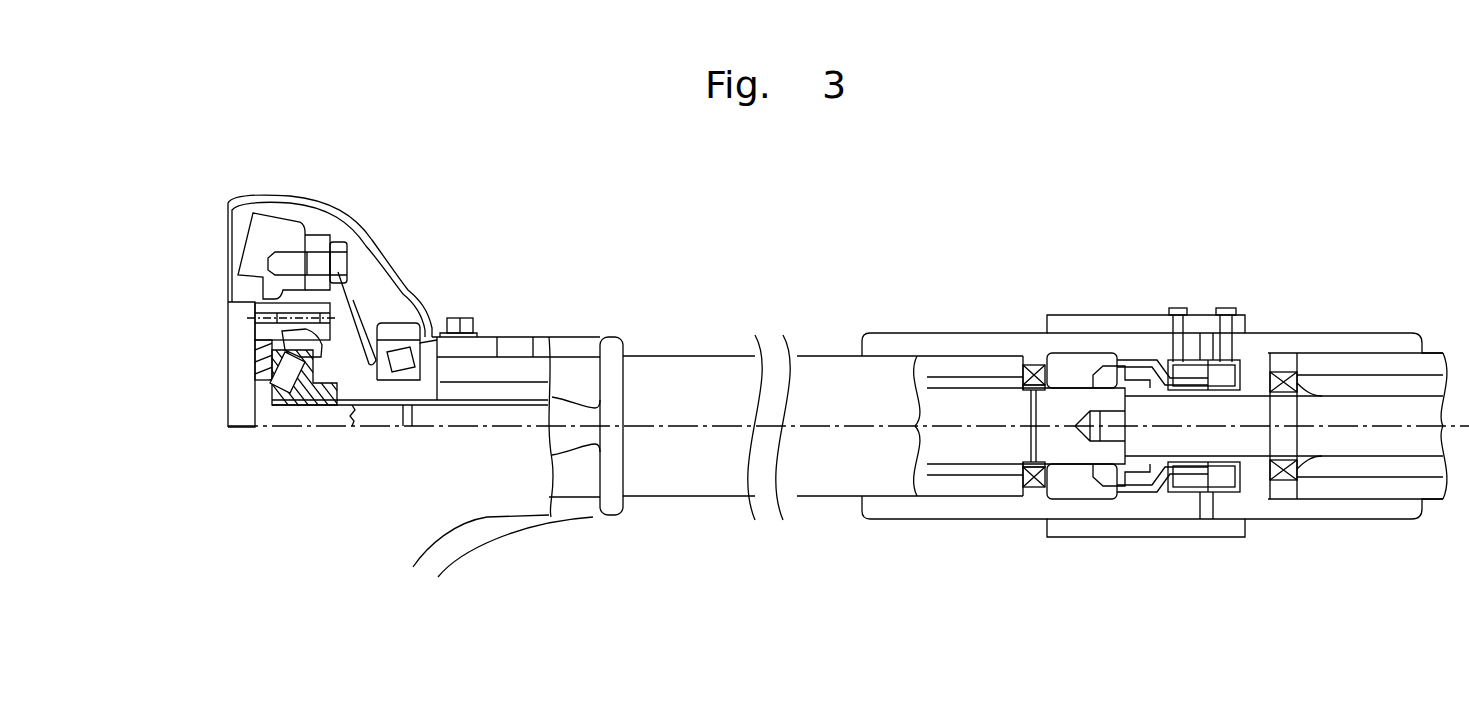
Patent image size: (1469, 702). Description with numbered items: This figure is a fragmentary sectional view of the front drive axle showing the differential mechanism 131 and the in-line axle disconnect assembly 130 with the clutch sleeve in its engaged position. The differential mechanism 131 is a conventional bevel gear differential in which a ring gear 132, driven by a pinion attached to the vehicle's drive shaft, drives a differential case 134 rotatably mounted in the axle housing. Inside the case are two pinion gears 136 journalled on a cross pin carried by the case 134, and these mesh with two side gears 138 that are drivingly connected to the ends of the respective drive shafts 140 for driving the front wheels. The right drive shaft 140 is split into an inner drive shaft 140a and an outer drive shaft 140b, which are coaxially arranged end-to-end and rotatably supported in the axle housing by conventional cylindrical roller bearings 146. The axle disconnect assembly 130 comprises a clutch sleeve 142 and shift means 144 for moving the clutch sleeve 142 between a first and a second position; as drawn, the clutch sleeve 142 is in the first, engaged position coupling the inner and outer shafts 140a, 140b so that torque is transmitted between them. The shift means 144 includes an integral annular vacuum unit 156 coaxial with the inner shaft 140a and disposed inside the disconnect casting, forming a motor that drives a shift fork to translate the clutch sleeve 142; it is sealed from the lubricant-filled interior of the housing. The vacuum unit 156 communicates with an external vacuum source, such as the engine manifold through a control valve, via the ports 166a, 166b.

The axle disconnect assembly 130 is at (1045, 540).
The differential mechanism 131 is at (204, 297).
The ring gear 132 is at (283, 230).
The differential case 134 is at (305, 298).
The pinion gears 136 is at (257, 352).
The side gears 138 is at (310, 395).
The drive shaft 140 is at (941, 445).
The inner drive shaft 140a is at (1053, 409).
The outer drive shaft 140b is at (1172, 438).
The clutch sleeve 142 is at (1107, 367).
The shift means 144 is at (1140, 346).
The cylindrical roller bearings 146 is at (1032, 490).
The vacuum unit 156 is at (1227, 475).
The port 166a is at (1228, 332).
The port 166b is at (1176, 332).